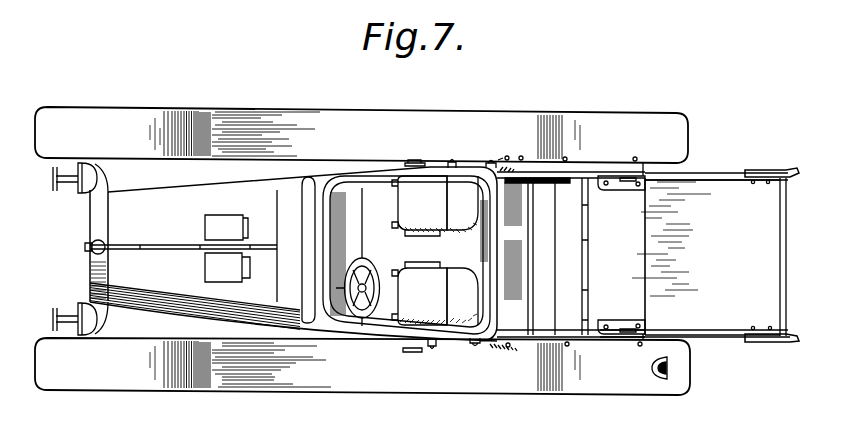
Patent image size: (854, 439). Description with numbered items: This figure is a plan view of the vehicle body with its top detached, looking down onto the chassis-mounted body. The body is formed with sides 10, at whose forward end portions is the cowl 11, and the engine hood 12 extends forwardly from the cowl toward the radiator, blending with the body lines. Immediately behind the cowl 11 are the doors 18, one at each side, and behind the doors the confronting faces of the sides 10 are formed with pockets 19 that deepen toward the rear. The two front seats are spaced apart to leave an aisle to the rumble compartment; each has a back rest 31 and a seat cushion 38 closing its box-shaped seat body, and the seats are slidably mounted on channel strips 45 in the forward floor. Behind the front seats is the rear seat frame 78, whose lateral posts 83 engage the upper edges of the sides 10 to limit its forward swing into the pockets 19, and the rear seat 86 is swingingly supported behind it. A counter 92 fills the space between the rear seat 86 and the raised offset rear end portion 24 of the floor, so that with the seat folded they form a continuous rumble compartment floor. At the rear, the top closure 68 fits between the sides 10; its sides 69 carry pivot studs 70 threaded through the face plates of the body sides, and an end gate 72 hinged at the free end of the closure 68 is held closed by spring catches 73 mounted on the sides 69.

The sides 10 is at (452, 170).
The cowl 11 is at (296, 250).
The engine hood 12 is at (195, 296).
The doors 18 is at (380, 170).
The pockets 19 is at (512, 257).
The raised offset rear end portion 24 is at (623, 256).
The back rest 31 is at (462, 250).
The seat cushion 38 is at (419, 250).
The channel strips 45 is at (386, 268).
The top closure 68 is at (706, 257).
The sides of the closure 69 is at (701, 178).
The pivot studs 70 is at (628, 188).
The end gate 72 is at (780, 246).
The spring catches 73 is at (775, 168).
The rear seat frame 78 is at (462, 167).
The lateral posts 83 is at (492, 162).
The rear seat 86 is at (533, 256).
The counter 92 is at (572, 256).